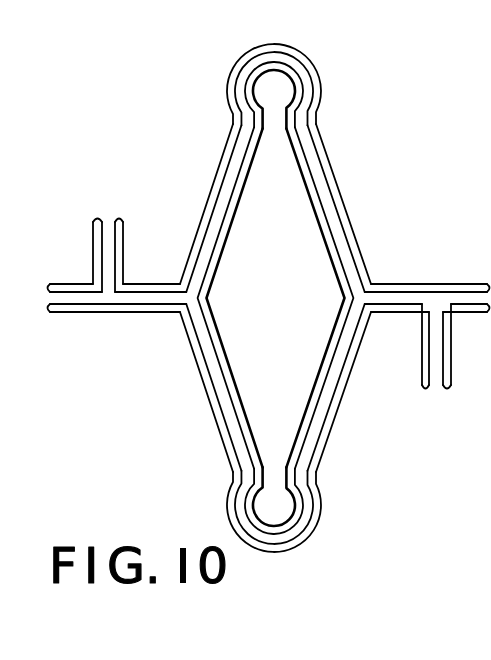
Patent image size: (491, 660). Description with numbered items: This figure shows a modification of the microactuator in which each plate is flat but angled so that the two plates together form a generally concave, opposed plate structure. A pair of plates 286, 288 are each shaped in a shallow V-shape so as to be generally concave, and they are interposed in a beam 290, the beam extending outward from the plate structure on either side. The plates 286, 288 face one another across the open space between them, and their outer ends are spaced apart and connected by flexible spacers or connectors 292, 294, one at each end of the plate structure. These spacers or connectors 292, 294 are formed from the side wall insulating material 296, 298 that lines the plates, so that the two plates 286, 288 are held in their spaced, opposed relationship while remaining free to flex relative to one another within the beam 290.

The plate 286 is at (188, 296).
The plate 288 is at (323, 188).
The beam 290 is at (147, 300).
The flexible spacer or connector 292 is at (329, 91).
The flexible spacer or connector 294 is at (323, 531).
The side wall insulating material 296 is at (215, 197).
The side wall insulating material 298 is at (231, 216).